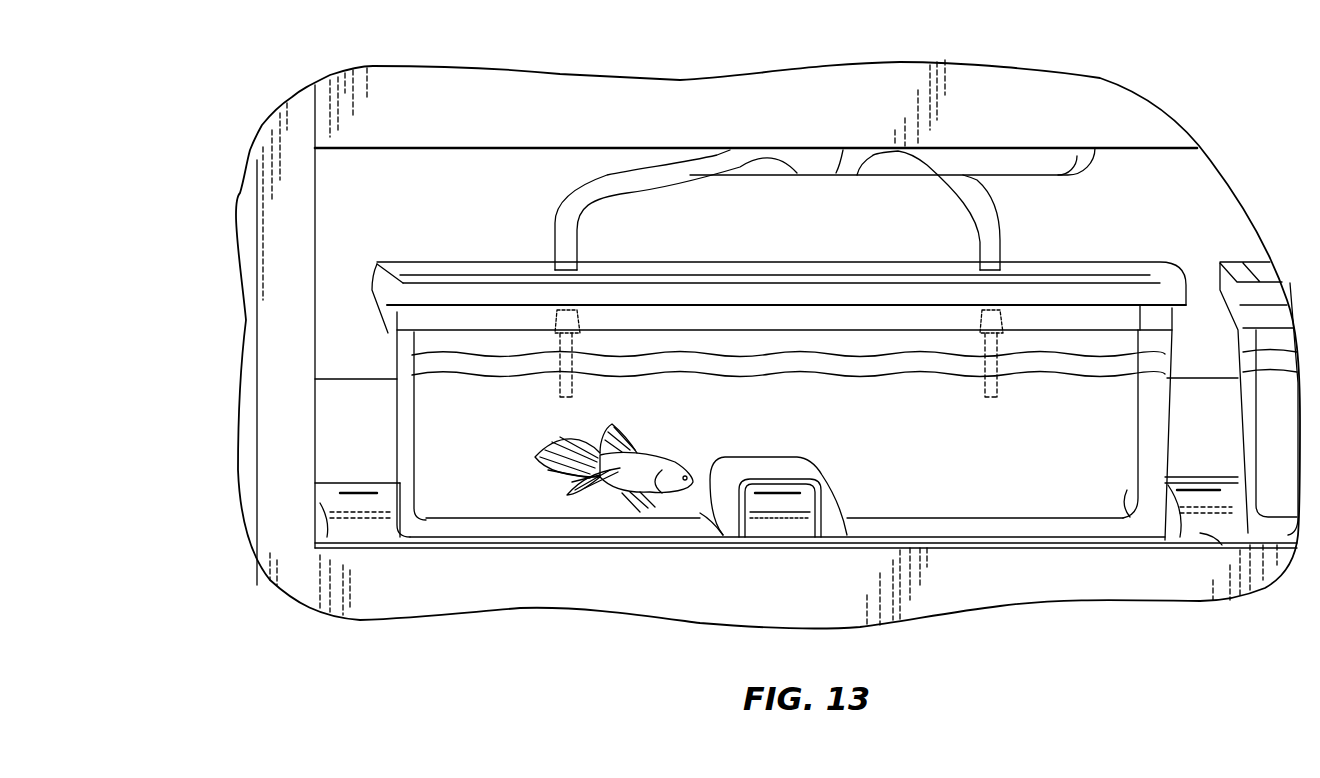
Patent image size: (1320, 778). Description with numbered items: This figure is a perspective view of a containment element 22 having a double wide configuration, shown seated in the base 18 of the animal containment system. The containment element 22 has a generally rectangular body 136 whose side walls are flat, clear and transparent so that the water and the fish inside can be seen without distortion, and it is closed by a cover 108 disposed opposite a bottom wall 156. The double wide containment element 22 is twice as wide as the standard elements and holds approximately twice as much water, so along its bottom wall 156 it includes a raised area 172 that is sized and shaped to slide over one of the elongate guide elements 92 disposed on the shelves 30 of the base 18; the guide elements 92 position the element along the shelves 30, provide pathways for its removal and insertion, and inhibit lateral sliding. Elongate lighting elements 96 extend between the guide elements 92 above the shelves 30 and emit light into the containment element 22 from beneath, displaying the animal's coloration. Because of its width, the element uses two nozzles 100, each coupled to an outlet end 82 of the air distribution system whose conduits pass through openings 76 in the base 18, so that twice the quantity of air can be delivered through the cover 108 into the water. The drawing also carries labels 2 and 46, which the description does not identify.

The aquarium system 2 is at (1245, 530).
The base 18 is at (372, 588).
The containment element 22 is at (505, 512).
The shelves 30 is at (410, 603).
The drain fitting 46 is at (775, 495).
The openings 76 is at (1115, 160).
The outlet ends 82 is at (637, 190).
The guide elements 92 is at (347, 528).
The lighting elements 96 is at (340, 493).
The nozzles 100 is at (556, 400).
The cover 108 is at (392, 250).
The body 136 is at (427, 424).
The bottom wall 156 is at (1053, 530).
The raised area 172 is at (772, 475).